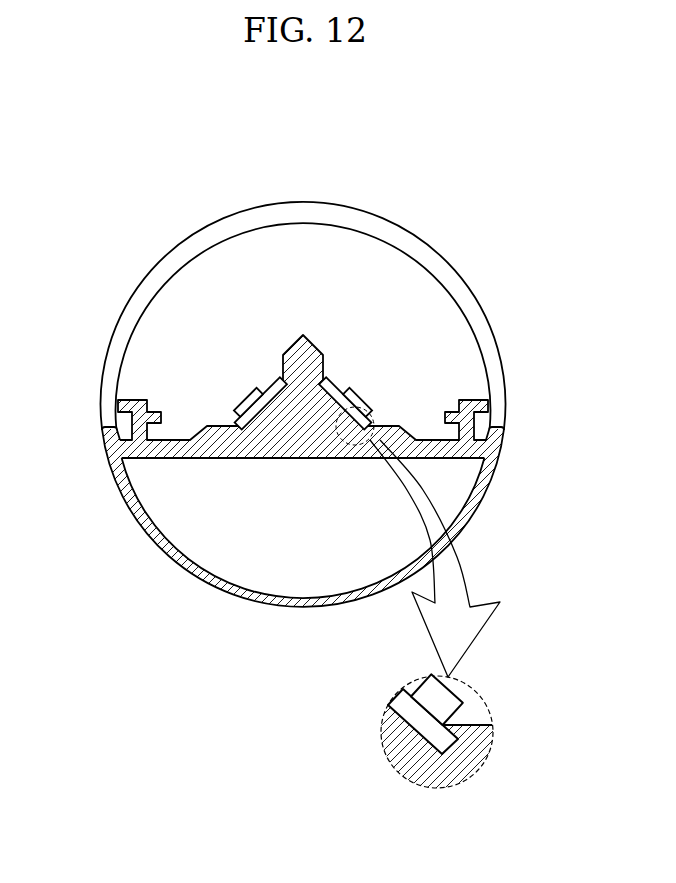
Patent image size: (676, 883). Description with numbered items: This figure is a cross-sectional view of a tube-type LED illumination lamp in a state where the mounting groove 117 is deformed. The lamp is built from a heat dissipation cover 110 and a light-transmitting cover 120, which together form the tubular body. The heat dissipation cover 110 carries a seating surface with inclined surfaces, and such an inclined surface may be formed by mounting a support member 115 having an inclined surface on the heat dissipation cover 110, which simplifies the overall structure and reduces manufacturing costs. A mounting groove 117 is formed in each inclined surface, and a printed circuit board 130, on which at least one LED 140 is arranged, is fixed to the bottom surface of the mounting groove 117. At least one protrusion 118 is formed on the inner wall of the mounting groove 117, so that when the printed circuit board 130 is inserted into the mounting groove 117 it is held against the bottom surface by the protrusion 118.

The heat dissipation cover 110 is at (298, 603).
The support member 115 is at (272, 456).
The mounting groove 117 is at (257, 417).
The protrusion 118 is at (473, 705).
The light-transmitting cover 120 is at (367, 228).
The printed circuit board 130 is at (256, 399).
The LED 140 is at (270, 383).